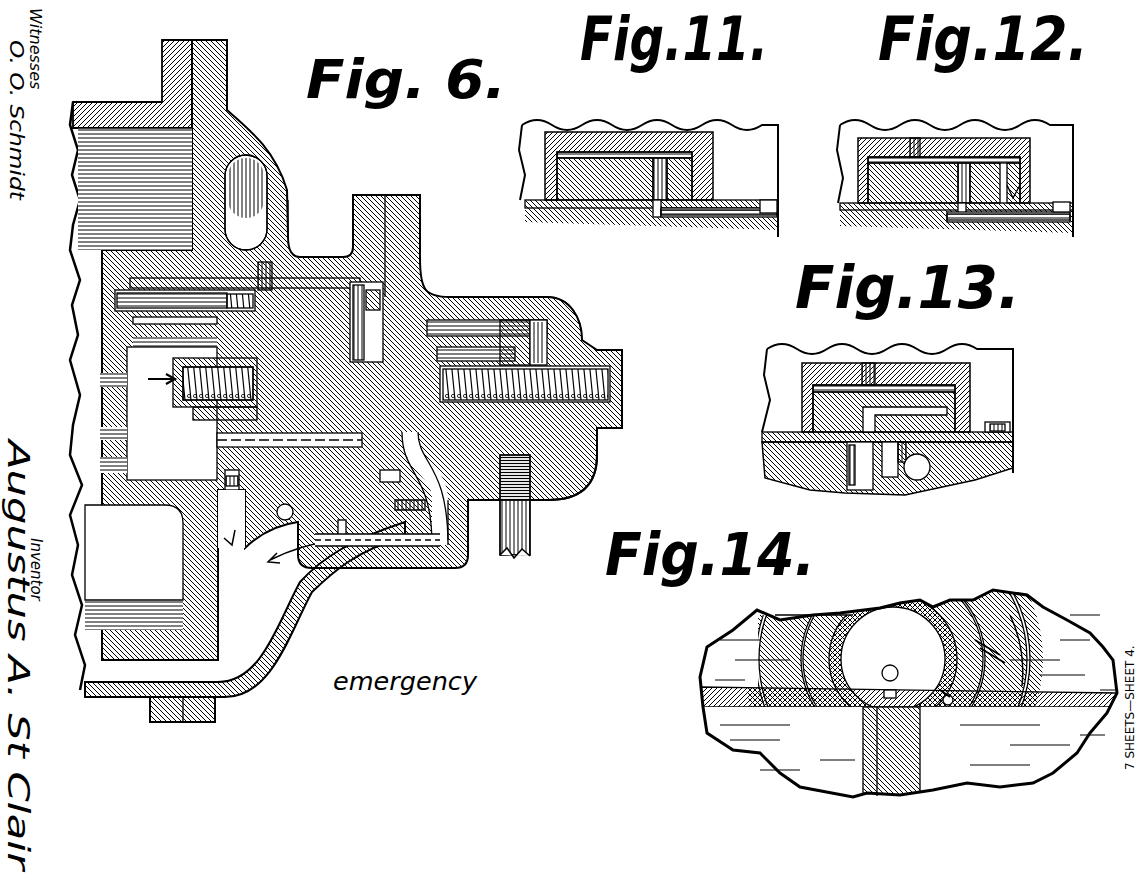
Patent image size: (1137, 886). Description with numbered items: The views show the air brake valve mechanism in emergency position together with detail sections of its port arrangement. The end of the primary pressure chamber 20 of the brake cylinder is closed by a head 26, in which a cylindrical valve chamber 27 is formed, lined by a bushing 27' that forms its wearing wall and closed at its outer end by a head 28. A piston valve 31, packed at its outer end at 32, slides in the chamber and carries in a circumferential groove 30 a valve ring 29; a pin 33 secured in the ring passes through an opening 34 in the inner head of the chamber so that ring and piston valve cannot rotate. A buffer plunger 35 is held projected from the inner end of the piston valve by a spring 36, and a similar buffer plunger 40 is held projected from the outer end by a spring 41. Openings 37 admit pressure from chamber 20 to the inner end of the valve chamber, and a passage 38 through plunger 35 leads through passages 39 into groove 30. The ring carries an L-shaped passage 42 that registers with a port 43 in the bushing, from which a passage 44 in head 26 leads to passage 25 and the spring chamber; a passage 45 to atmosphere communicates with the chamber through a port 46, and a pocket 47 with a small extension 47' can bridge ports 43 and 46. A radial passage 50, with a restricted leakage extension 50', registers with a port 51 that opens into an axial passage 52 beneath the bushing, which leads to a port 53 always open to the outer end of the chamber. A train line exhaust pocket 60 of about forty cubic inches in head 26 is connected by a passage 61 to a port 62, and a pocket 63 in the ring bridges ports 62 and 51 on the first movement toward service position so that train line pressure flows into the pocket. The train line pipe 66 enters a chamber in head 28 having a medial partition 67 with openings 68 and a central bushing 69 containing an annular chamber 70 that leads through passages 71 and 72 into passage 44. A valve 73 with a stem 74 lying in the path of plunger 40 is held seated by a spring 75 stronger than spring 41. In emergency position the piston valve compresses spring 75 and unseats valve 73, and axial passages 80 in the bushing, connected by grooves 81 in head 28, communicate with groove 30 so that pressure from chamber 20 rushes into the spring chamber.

In FIG. 6, the primary pressure chamber 20 is at (80, 232).
In FIG. 6, the passage 25 is at (130, 700).
In FIG. 6, the head 26 is at (226, 112).
In FIG. 14, the head 26 is at (700, 729).
In FIG. 6, the cylindrical valve chamber 27 is at (110, 509).
In FIG. 11, the bushing 27' is at (616, 191).
In FIG. 12, the bushing 27' is at (956, 218).
In FIG. 13, the bushing 27' is at (856, 463).
In FIG. 14, the bushing 27' is at (900, 659).
In FIG. 6, the head 28 is at (575, 314).
In FIG. 6, the valve ring 29 is at (336, 256).
In FIG. 11, the valve ring 29 is at (632, 180).
In FIG. 12, the valve ring 29 is at (905, 195).
In FIG. 14, the valve ring 29 is at (977, 597).
In FIG. 6, the circumferential groove 30 is at (316, 256).
In FIG. 11, the circumferential groove 30 is at (682, 150).
In FIG. 12, the circumferential groove 30 is at (955, 163).
In FIG. 13, the circumferential groove 30 is at (808, 368).
In FIG. 14, the circumferential groove 30 is at (833, 618).
In FIG. 6, the piston valve 31 is at (217, 437).
In FIG. 12, the piston valve 31 is at (890, 140).
In FIG. 13, the piston valve 31 is at (835, 385).
In FIG. 14, the piston valve 31 is at (928, 603).
In FIG. 12, the packing 32 is at (1014, 200).
In FIG. 6, the pin 33 is at (133, 320).
In FIG. 6, the opening 34 is at (115, 298).
In FIG. 6, the buffer plunger 35 is at (194, 423).
In FIG. 6, the spring 36 is at (187, 376).
In FIG. 6, the openings 37 is at (114, 453).
In FIG. 6, the passage 38 is at (178, 393).
In FIG. 6, the passages 39 is at (263, 290).
In FIG. 12, the passages 39 is at (918, 138).
In FIG. 13, the passages 39 is at (875, 366).
In FIG. 6, the buffer plunger 40 is at (428, 296).
In FIG. 6, the spring 41 is at (400, 290).
In FIG. 6, the passage 42 is at (436, 550).
In FIG. 13, the passage 42 is at (813, 412).
In FIG. 14, the passage 42 is at (890, 665).
In FIG. 6, the port 43 is at (228, 492).
In FIG. 13, the port 43 is at (862, 470).
In FIG. 6, the passage 44 is at (256, 674).
In FIG. 6, the passage 45 is at (293, 563).
In FIG. 13, the passage 45 is at (930, 478).
In FIG. 6, the port 46 is at (240, 548).
In FIG. 13, the port 46 is at (890, 470).
In FIG. 6, the pocket 47 is at (365, 570).
In FIG. 13, the pocket 47 is at (989, 397).
In FIG. 14, the pocket 47 is at (858, 754).
In FIG. 6, the extension 47' is at (285, 558).
In FIG. 13, the extension 47' is at (866, 499).
In FIG. 6, the passage 50 is at (441, 517).
In FIG. 11, the passage 50 is at (653, 145).
In FIG. 12, the passage 50 is at (1002, 144).
In FIG. 13, the passage 50 is at (900, 376).
In FIG. 11, the restricted extension 50' is at (654, 209).
In FIG. 12, the restricted extension 50' is at (966, 215).
In FIG. 11, the port 51 is at (657, 217).
In FIG. 12, the port 51 is at (963, 218).
In FIG. 11, the passage 52 is at (722, 217).
In FIG. 12, the passage 52 is at (1008, 222).
In FIG. 14, the passage 52 is at (950, 706).
In FIG. 11, the port 53 is at (768, 200).
In FIG. 12, the port 53 is at (1058, 203).
In FIG. 13, the port 53 is at (1005, 425).
In FIG. 6, the train line exhaust pocket 60 is at (262, 182).
In FIG. 14, the train line exhaust pocket 60 is at (1060, 618).
In FIG. 14, the passage 61 is at (1025, 674).
In FIG. 14, the port 62 is at (1005, 656).
In FIG. 14, the pocket 63 is at (958, 618).
In FIG. 6, the train line pipe 66 is at (516, 562).
In FIG. 6, the medial partition 67 is at (517, 322).
In FIG. 6, the openings 68 is at (488, 320).
In FIG. 6, the bushing 69 is at (538, 318).
In FIG. 6, the annular chamber 70 is at (470, 322).
In FIG. 6, the passage 71 is at (452, 522).
In FIG. 6, the passage 72 is at (400, 552).
In FIG. 6, the valve 73 is at (565, 468).
In FIG. 6, the stem 74 is at (420, 480).
In FIG. 6, the spring 75 is at (622, 382).
In FIG. 6, the passages 80 is at (421, 224).
In FIG. 6, the grooves 81 is at (422, 247).